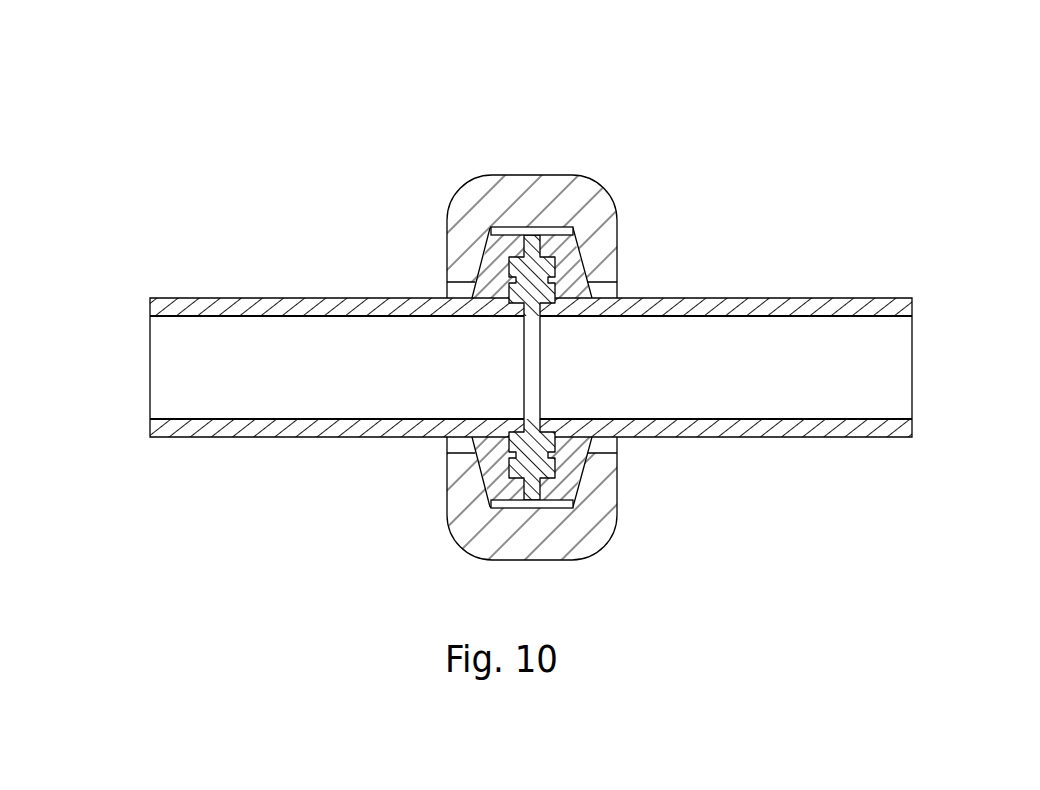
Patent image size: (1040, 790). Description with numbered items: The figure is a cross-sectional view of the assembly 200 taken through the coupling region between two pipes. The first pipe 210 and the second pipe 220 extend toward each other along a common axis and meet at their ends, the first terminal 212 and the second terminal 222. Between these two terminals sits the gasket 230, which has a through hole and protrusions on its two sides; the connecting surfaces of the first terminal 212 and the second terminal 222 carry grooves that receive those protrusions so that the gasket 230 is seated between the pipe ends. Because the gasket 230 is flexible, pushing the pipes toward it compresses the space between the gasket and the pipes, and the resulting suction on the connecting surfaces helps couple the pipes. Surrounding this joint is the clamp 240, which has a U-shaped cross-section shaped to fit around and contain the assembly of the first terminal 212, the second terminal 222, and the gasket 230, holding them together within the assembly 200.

The assembly 200 is at (1020, 108).
The first pipe 210 is at (311, 298).
The first terminal 212 is at (496, 278).
The second pipe 220 is at (748, 298).
The second terminal 222 is at (574, 275).
The gasket 230 is at (533, 265).
The clamp 240 is at (532, 183).